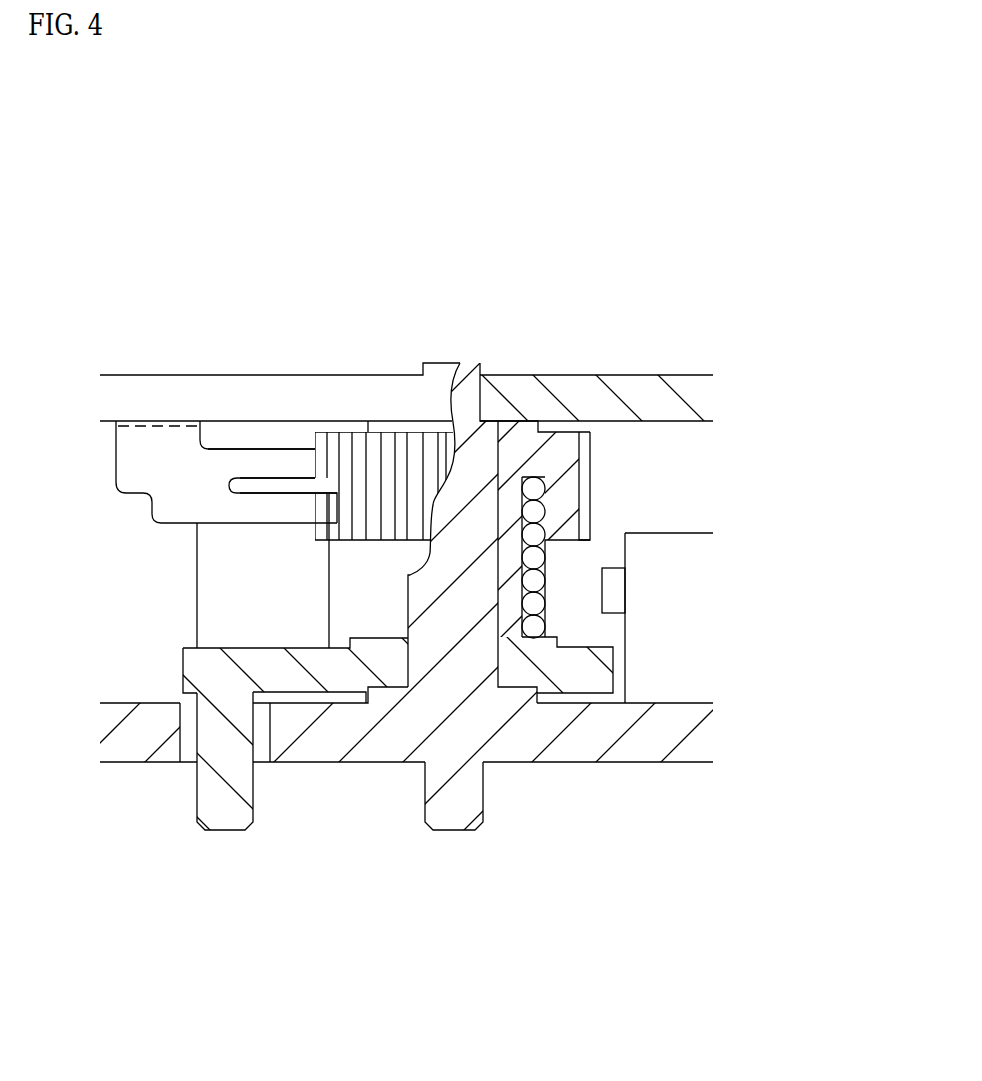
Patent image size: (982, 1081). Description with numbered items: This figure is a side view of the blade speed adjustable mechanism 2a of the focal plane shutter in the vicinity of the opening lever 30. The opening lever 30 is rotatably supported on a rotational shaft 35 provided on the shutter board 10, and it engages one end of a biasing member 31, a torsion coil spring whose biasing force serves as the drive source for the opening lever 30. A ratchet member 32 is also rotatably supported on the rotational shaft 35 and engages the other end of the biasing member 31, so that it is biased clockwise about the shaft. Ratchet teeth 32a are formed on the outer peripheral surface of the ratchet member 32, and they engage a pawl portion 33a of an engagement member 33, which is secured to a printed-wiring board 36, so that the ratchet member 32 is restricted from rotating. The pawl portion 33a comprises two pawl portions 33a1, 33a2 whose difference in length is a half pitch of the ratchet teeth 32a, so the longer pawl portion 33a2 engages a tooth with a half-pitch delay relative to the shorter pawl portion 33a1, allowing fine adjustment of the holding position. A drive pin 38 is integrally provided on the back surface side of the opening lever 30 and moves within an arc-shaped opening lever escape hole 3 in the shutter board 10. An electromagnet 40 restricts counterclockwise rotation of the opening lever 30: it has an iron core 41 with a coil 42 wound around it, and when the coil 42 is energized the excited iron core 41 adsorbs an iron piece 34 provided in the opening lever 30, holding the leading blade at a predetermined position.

The blade speed adjustable mechanism 2a is at (544, 281).
The opening lever escape hole 3 is at (187, 744).
The shutter board 10 is at (697, 742).
The opening lever 30 is at (290, 670).
The biasing member 31 is at (546, 492).
The ratchet member 32 is at (563, 488).
The ratchet teeth 32a is at (585, 452).
The engagement member 33 is at (155, 462).
The pawl portion 33a is at (192, 283).
The pawl portion 33a1 is at (268, 460).
The pawl portion 33a2 is at (264, 512).
The iron piece 34 is at (213, 582).
The rotational shaft 35 is at (453, 398).
The printed-wiring board 36 is at (386, 395).
The drive pin 38 is at (224, 797).
The electromagnet 40 is at (698, 505).
The iron core 41 is at (613, 592).
The coil 42 is at (678, 633).